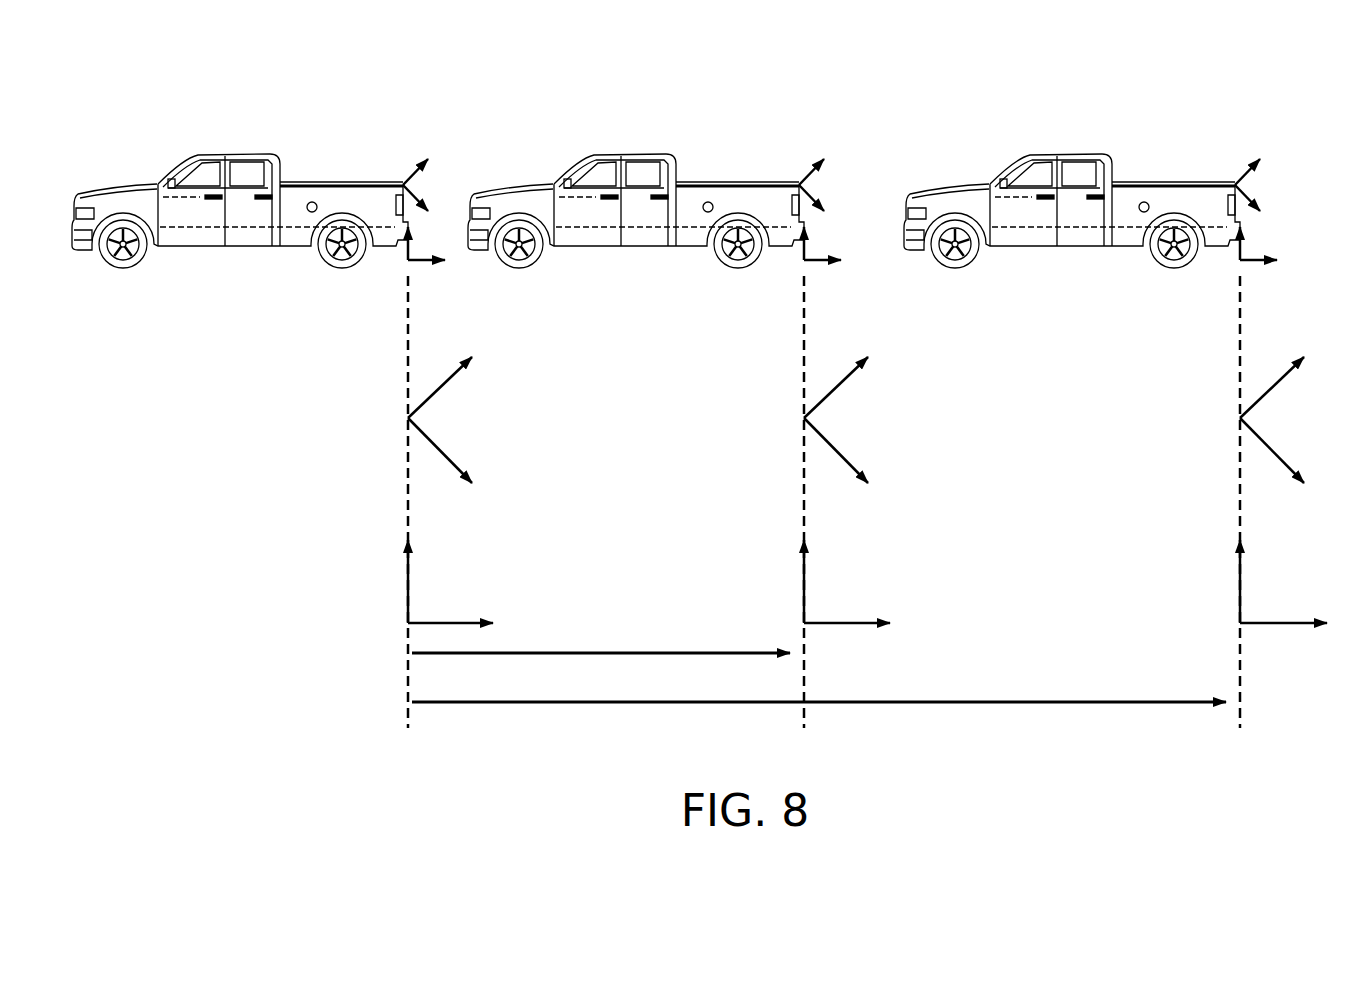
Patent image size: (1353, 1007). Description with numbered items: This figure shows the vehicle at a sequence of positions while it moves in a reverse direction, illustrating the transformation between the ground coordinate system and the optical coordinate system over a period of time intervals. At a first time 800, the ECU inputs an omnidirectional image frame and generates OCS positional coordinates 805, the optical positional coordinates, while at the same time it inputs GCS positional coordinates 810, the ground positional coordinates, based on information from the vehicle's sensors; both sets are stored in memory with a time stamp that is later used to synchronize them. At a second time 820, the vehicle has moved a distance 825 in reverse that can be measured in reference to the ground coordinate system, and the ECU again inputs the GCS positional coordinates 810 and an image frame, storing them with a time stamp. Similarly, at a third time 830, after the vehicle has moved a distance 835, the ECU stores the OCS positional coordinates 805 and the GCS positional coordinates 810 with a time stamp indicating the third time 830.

The first time 800 is at (408, 519).
The OCS positional coordinates 805 is at (395, 418).
The GCS positional coordinates 810 is at (388, 592).
The second time 820 is at (835, 519).
The distance 825 is at (543, 655).
The third time 830 is at (1271, 519).
The distance 835 is at (985, 704).